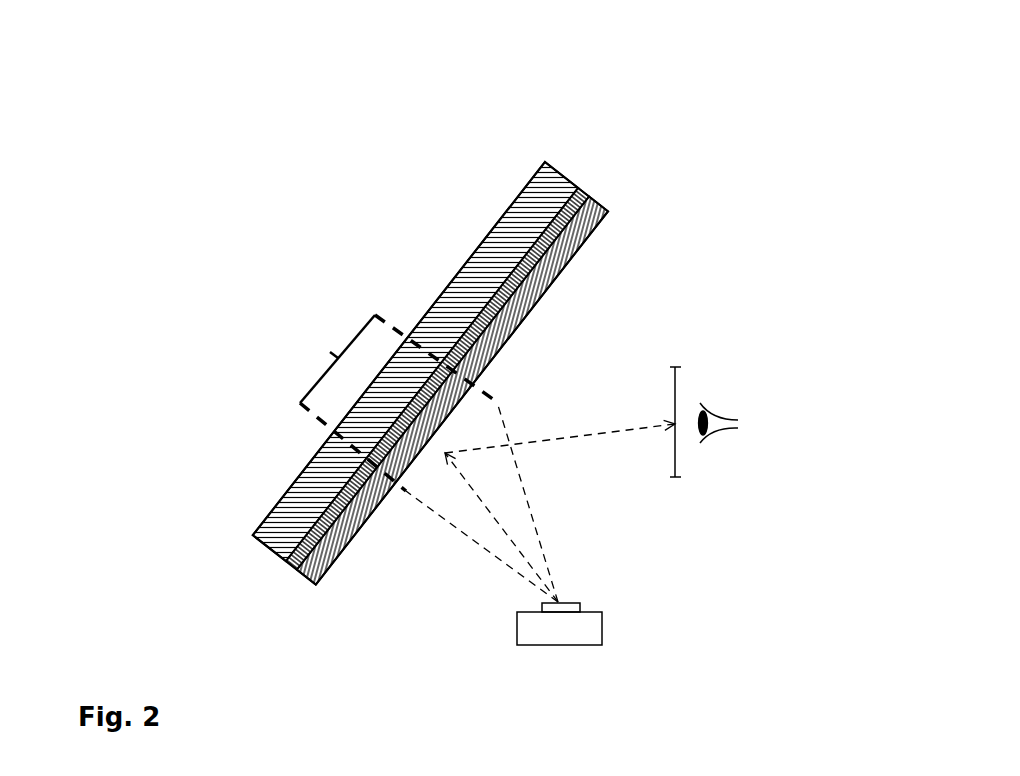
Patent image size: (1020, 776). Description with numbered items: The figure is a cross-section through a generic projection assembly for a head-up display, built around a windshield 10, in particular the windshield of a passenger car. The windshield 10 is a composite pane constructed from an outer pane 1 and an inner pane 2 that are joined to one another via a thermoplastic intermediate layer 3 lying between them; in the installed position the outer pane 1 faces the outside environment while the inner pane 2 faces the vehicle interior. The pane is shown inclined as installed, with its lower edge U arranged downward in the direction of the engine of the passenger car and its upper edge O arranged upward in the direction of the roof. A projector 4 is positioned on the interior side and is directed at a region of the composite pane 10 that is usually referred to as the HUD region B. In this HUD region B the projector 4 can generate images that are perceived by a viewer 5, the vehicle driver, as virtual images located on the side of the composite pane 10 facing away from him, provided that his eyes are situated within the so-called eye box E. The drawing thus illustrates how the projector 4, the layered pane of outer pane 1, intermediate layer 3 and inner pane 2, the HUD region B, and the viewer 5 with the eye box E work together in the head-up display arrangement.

The windshield 10 is at (512, 142).
The outer pane 1 is at (488, 235).
The inner pane 2 is at (607, 218).
The thermoplastic intermediate layer 3 is at (587, 198).
The projector 4 is at (583, 630).
The viewer 5 is at (735, 400).
The HUD region B is at (398, 403).
The upper edge O is at (577, 147).
The lower edge U is at (285, 595).
The eye box E is at (692, 382).